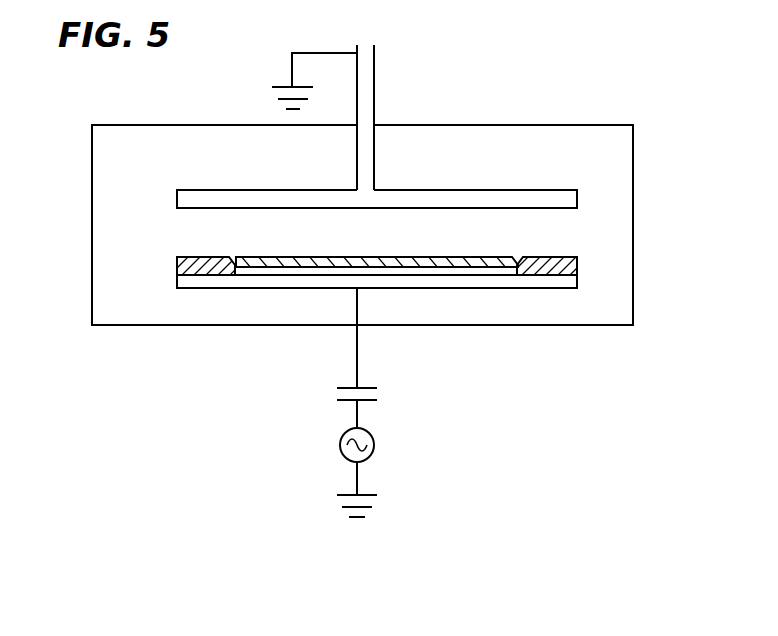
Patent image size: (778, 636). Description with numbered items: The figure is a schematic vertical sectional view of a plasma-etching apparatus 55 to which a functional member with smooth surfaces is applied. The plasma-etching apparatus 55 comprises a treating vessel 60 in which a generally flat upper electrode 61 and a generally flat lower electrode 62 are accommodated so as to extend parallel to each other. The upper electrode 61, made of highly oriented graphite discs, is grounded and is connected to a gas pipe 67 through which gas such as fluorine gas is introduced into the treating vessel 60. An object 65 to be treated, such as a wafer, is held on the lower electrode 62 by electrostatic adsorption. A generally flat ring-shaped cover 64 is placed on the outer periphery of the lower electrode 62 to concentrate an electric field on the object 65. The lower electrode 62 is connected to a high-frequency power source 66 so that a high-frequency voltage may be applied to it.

The plasma-etching apparatus 55 is at (573, 74).
The treating vessel 60 is at (612, 125).
The upper electrode 61 is at (510, 190).
The lower electrode 62 is at (468, 288).
The ring-shaped cover 64 is at (577, 264).
The object to be treated 65 is at (478, 257).
The high-frequency power source 66 is at (374, 443).
The gas pipe 67 is at (374, 70).